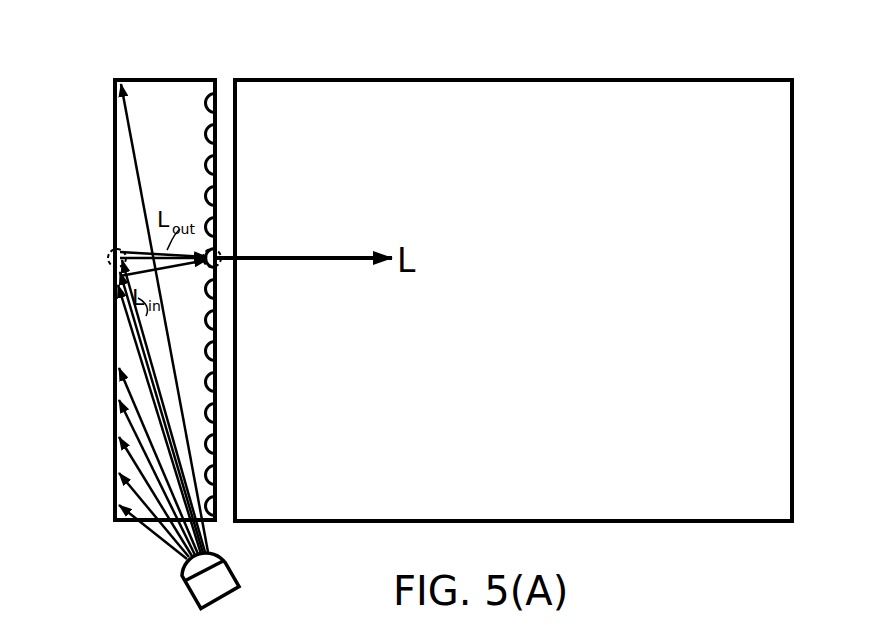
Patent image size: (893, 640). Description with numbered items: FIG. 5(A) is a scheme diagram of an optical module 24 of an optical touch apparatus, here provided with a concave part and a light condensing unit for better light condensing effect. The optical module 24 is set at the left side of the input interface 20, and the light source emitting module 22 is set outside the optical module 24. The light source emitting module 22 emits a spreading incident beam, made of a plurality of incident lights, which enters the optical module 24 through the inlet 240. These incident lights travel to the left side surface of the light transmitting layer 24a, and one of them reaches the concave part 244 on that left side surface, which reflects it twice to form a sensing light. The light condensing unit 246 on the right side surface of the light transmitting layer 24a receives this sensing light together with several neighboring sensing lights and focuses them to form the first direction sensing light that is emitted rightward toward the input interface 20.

The input interface 20 is at (306, 80).
The light source emitting module 22 is at (240, 586).
The optical module 24 is at (114, 192).
The light transmitting layer 24a is at (170, 112).
The inlet 240 is at (114, 521).
The concave part 244 is at (109, 256).
The light condensing unit 246 is at (222, 268).